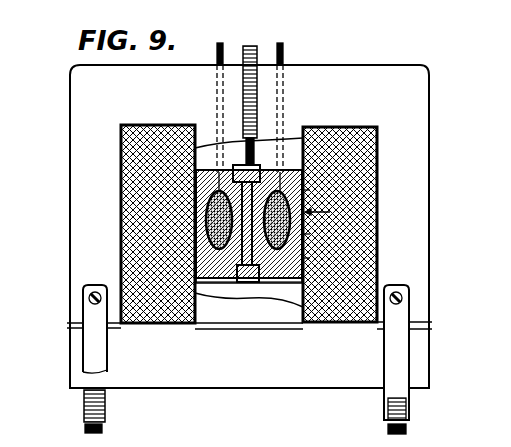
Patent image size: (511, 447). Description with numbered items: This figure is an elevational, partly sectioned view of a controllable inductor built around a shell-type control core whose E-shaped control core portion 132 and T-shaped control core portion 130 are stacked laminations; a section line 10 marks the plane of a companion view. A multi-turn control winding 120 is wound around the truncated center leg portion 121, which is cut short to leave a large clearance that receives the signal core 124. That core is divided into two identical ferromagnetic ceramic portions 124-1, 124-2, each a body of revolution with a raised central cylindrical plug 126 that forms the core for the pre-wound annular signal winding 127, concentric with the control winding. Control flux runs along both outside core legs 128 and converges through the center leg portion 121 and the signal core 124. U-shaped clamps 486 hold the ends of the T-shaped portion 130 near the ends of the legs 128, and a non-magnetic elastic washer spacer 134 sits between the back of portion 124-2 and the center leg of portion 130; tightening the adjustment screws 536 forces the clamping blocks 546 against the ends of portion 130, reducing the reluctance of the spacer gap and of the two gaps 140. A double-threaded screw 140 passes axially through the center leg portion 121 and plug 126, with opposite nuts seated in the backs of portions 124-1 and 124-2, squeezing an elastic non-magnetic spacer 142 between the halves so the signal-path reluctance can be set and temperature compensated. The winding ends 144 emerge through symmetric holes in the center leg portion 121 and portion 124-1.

The section line 10 is at (60, 212).
The multi-turn control winding 120 is at (377, 152).
The truncated center leg portion 121 is at (305, 128).
The signal core 124 is at (358, 221).
The signal core portion 124-1 is at (329, 193).
The signal core portion 124-2 is at (329, 262).
The raised central cylindrical plug 126 is at (324, 237).
The signal winding 127 is at (198, 240).
The outside core legs 128 is at (70, 252).
The T-shaped control core portion 130 is at (232, 388).
The E-shaped control core portion 132 is at (78, 92).
The non-magnetic elastic washer spacer 134 is at (273, 231).
The double-threaded screw 140 is at (251, 45).
The elastic non-magnetic spacer 142 is at (198, 217).
The ends of the signal winding 144 is at (219, 43).
The U-shaped clamps 486 is at (88, 352).
The adjustment screws 536 is at (85, 430).
The clamping blocks 546 is at (82, 392).